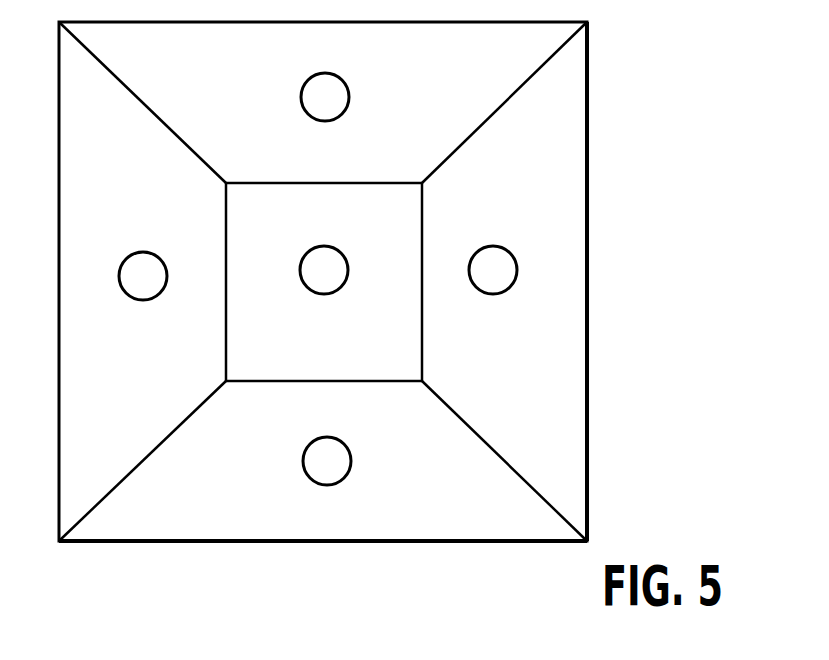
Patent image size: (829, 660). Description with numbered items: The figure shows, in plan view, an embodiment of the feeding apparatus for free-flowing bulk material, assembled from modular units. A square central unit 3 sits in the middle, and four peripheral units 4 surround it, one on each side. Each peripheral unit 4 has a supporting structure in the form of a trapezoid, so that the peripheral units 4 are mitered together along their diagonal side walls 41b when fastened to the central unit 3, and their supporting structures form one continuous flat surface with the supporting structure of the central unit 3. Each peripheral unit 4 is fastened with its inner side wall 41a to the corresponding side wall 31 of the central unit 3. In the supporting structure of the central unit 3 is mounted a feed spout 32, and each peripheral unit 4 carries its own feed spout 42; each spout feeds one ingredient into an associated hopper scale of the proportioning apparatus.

The central unit 3 is at (397, 236).
The peripheral unit 4 is at (588, 210).
The side wall of central unit 31 is at (391, 289).
The feed spout 32 is at (342, 286).
The side wall 41a is at (423, 343).
The side wall 41b is at (541, 68).
The feed spout 42 is at (498, 246).